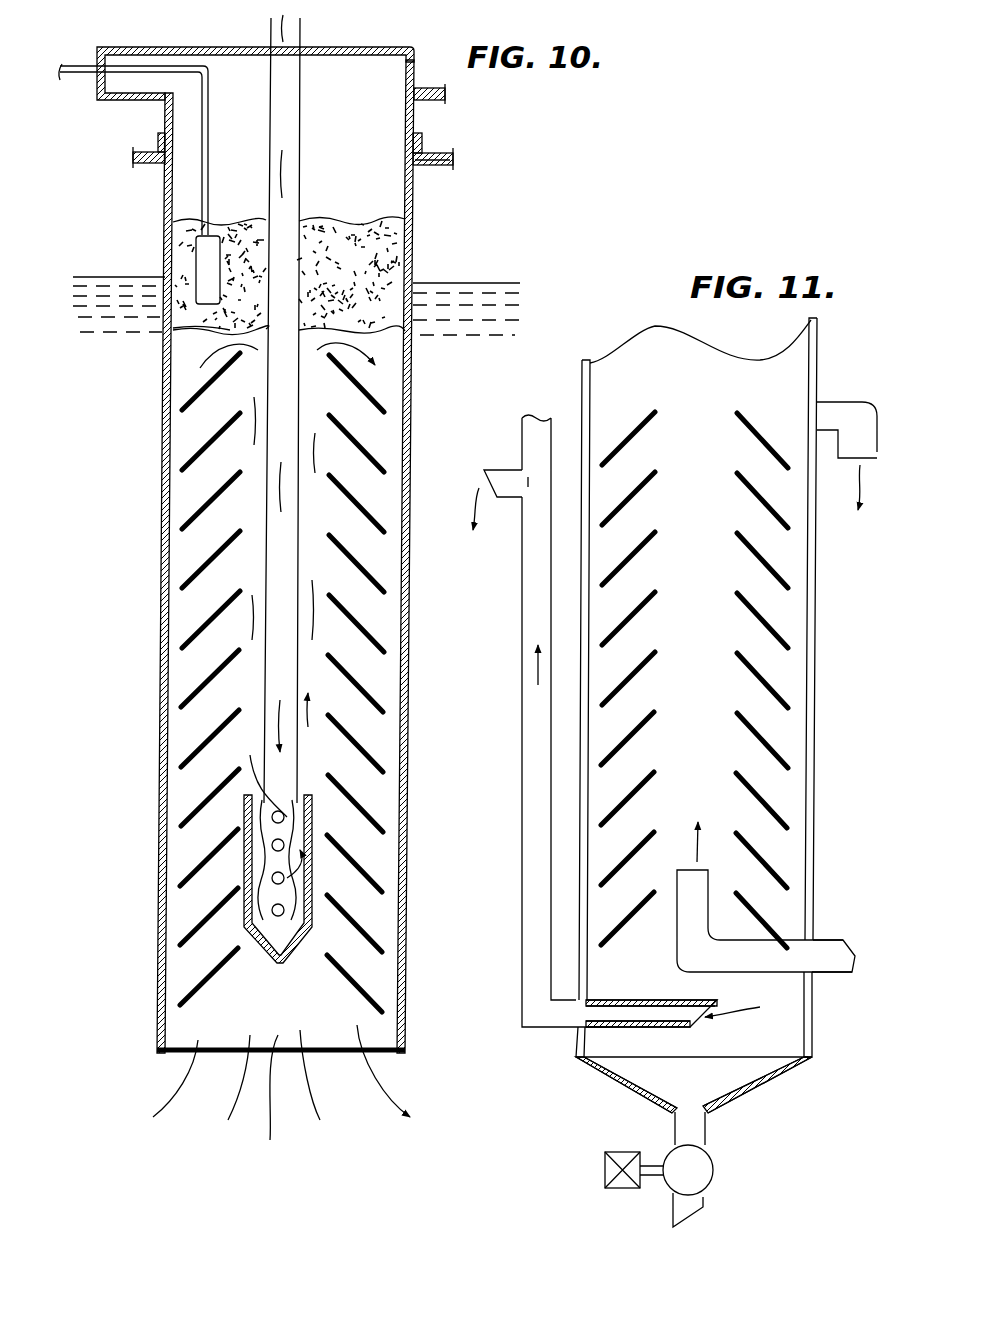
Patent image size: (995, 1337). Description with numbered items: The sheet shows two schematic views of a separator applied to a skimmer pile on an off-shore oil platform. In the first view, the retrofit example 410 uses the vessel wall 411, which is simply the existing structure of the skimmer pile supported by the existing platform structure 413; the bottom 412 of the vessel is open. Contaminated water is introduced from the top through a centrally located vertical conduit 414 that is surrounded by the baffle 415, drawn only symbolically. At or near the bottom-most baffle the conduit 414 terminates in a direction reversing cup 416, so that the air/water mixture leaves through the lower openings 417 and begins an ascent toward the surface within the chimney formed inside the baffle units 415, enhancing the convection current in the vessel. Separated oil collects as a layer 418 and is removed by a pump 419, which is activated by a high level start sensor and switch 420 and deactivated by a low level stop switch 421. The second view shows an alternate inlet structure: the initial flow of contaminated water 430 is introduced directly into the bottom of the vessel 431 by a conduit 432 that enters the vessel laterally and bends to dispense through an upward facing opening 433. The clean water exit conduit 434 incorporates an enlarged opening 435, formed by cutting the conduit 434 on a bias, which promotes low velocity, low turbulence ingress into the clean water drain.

In FIG. 10, the example 410 is at (158, 405).
In FIG. 10, the vessel wall 411 is at (163, 541).
In FIG. 10, the bottom 412 is at (281, 1106).
In FIG. 10, the platform structure 413 is at (420, 160).
In FIG. 10, the vertical conduit 414 is at (294, 127).
In FIG. 10, the baffle 415 is at (207, 670).
In FIG. 10, the direction reversing cup 416 is at (246, 878).
In FIG. 10, the lower openings 417 is at (287, 878).
In FIG. 10, the oil layer 418 is at (163, 333).
In FIG. 10, the pump 419 is at (207, 257).
In FIG. 10, the high level start sensor and switch 420 is at (387, 193).
In FIG. 10, the low level stop switch 421 is at (388, 247).
In FIG. 11, the contaminated water 430 is at (857, 956).
In FIG. 11, the vessel 431 is at (815, 650).
In FIG. 11, the conduit 432 is at (827, 960).
In FIG. 11, the upward facing opening 433 is at (700, 862).
In FIG. 11, the clean water exit conduit 434 is at (535, 905).
In FIG. 11, the enlarged opening 435 is at (697, 1022).